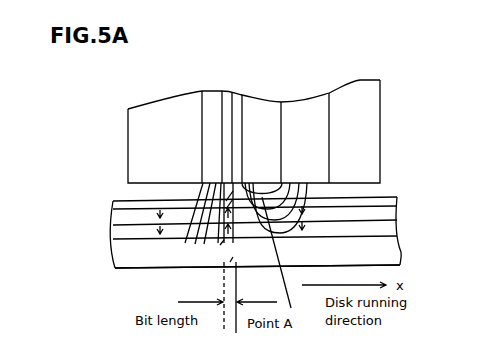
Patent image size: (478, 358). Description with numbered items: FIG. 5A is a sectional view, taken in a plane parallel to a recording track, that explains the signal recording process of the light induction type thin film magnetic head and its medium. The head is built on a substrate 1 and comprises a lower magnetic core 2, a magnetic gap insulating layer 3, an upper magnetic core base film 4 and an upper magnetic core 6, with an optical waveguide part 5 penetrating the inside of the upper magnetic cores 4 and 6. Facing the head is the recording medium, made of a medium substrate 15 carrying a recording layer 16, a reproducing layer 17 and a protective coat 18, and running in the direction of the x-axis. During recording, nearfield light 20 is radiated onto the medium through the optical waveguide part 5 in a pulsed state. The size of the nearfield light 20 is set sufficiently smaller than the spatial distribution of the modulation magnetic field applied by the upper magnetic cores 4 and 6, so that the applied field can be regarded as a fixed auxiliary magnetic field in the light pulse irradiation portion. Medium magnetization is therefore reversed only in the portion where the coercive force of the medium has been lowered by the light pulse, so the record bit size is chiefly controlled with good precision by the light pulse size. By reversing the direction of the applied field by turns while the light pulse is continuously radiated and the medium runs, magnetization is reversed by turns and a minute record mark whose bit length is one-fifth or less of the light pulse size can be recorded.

The substrate 1 is at (343, 130).
The lower magnetic core 2 is at (303, 130).
The magnetic gap insulating layer 3 is at (260, 110).
The upper magnetic core base film 4 is at (236, 102).
The optical waveguide part 5 is at (225, 98).
The upper magnetic core 6 is at (208, 102).
The medium substrate 15 is at (124, 249).
The recording layer 16 is at (126, 233).
The reproducing layer 17 is at (125, 220).
The protective coat 18 is at (126, 205).
The nearfield light 20 is at (230, 247).